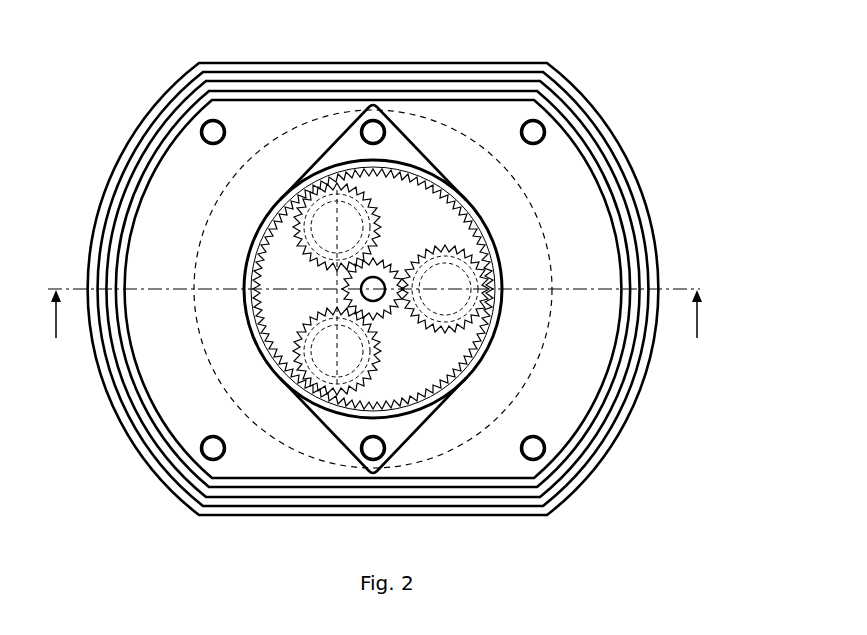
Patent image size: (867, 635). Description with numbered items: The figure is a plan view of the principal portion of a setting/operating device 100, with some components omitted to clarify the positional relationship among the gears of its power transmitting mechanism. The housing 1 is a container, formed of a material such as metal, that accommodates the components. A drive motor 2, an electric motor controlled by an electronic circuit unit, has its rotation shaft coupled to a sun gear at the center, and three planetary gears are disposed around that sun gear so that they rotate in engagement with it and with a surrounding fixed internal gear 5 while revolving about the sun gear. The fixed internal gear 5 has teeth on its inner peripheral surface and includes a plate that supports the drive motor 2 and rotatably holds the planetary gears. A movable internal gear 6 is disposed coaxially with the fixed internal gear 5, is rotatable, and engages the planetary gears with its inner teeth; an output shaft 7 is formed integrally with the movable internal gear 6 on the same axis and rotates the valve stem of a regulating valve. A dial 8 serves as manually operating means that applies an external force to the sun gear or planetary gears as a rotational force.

The setting/operating device 100 is at (691, 52).
The housing 1 is at (186, 72).
The drive motor 2 is at (415, 165).
The fixed internal gear 5 is at (452, 192).
The movable internal gear 6 is at (455, 200).
The dial 8 is at (364, 288).
The output shaft 7 is at (378, 297).